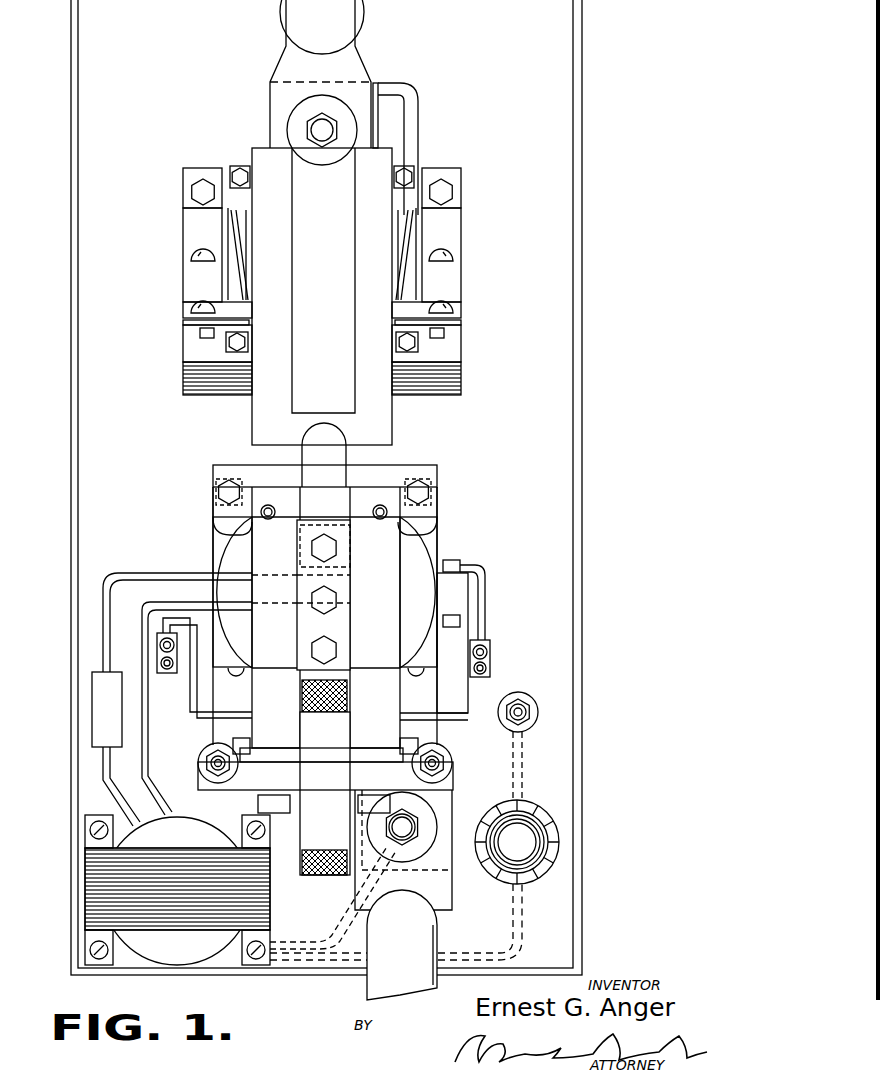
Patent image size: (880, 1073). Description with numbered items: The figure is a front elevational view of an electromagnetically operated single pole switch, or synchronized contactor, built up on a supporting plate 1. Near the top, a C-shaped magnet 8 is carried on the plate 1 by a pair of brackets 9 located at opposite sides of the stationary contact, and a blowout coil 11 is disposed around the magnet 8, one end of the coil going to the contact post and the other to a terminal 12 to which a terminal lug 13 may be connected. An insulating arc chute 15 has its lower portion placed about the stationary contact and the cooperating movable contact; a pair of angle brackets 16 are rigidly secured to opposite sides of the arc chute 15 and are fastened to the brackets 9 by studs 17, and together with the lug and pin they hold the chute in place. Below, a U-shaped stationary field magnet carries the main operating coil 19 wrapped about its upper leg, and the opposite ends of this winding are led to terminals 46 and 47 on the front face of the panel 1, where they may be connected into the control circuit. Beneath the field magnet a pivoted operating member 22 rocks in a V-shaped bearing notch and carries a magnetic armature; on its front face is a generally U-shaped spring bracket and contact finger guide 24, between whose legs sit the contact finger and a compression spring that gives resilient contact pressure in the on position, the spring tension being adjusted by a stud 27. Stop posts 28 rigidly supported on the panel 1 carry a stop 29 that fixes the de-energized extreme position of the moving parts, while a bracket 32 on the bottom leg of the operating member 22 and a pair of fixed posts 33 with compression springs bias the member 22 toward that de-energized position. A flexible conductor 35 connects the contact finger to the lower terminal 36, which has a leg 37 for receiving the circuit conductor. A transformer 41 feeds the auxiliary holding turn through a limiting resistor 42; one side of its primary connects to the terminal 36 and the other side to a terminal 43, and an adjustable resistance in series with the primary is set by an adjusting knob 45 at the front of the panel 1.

The supporting plate 1 is at (562, 66).
The C-shaped magnet 8 is at (190, 346).
The brackets 9 is at (195, 177).
The blowout coil 11 is at (238, 240).
The terminal 12 is at (388, 92).
The terminal lug 13 is at (292, 34).
The insulating arc chute 15 is at (262, 414).
The angle brackets 16 is at (186, 325).
The studs 17 is at (200, 309).
The main operating coil 19 is at (420, 556).
The pivoted operating member 22 is at (386, 737).
The spring bracket and contact finger guide 24 is at (355, 565).
The stud 27 is at (330, 548).
The stop posts 28 is at (440, 481).
The stop 29 is at (303, 468).
The bracket 32 is at (450, 797).
The fixed posts 33 is at (204, 766).
The flexible conductor 35 is at (342, 878).
The lower terminal 36 is at (448, 868).
The leg 37 is at (438, 912).
The transformer 41 is at (90, 870).
The limiting resistor 42 is at (100, 694).
The terminal 43 is at (526, 702).
The adjusting knob 45 is at (560, 840).
The terminal 46 is at (160, 676).
The terminal 47 is at (492, 660).